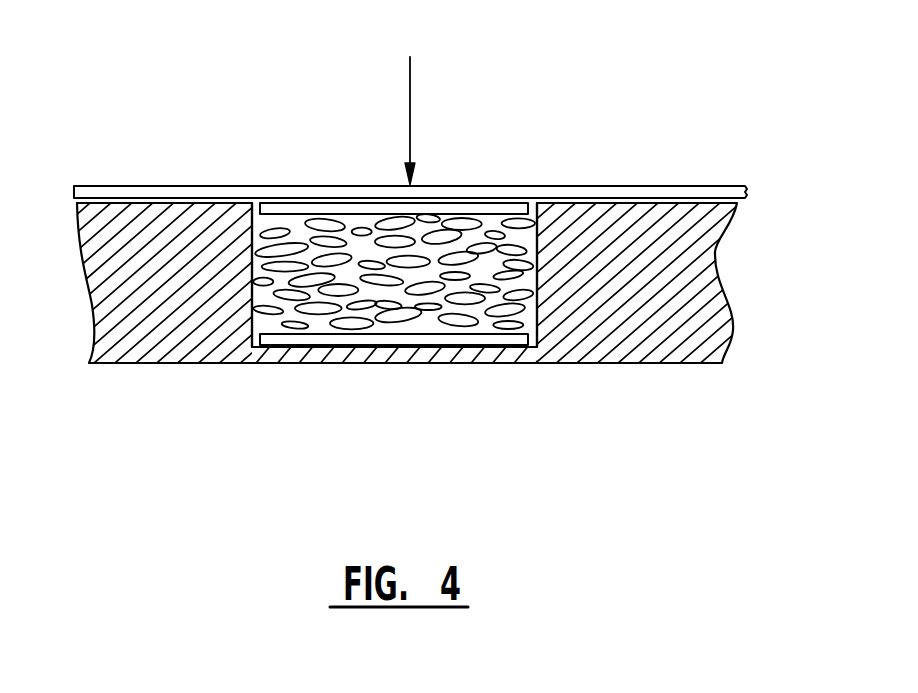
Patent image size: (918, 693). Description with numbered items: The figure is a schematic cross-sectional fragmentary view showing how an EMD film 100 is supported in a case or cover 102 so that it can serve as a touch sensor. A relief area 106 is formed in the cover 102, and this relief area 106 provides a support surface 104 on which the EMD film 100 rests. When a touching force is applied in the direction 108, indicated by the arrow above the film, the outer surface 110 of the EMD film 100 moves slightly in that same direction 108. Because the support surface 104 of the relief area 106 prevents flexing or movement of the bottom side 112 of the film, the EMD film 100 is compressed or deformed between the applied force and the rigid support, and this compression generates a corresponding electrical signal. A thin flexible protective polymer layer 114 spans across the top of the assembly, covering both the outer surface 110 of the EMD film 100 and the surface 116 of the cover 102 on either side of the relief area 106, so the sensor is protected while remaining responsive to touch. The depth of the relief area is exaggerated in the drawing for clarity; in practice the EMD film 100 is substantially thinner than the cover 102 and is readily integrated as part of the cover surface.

The EMD film 100 is at (477, 233).
The case or cover 102 is at (653, 228).
The support surface 104 is at (296, 335).
The relief area 106 is at (445, 355).
The direction of applied force 108 is at (412, 97).
The outer surface of the EMD film 110 is at (285, 213).
The bottom side of the EMD film 112 is at (503, 345).
The protective polymer layer 114 is at (213, 186).
The surface of the cover 116 is at (158, 205).